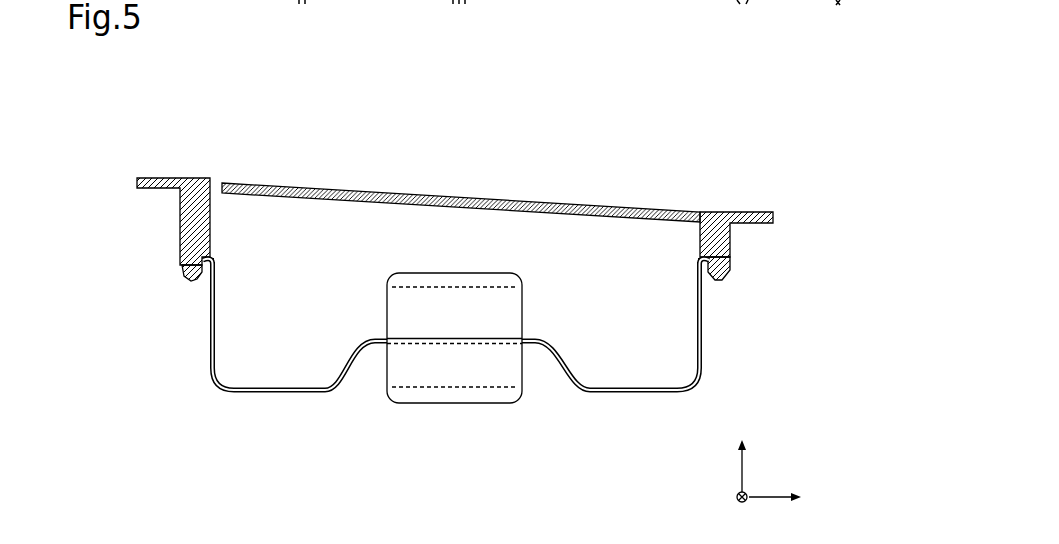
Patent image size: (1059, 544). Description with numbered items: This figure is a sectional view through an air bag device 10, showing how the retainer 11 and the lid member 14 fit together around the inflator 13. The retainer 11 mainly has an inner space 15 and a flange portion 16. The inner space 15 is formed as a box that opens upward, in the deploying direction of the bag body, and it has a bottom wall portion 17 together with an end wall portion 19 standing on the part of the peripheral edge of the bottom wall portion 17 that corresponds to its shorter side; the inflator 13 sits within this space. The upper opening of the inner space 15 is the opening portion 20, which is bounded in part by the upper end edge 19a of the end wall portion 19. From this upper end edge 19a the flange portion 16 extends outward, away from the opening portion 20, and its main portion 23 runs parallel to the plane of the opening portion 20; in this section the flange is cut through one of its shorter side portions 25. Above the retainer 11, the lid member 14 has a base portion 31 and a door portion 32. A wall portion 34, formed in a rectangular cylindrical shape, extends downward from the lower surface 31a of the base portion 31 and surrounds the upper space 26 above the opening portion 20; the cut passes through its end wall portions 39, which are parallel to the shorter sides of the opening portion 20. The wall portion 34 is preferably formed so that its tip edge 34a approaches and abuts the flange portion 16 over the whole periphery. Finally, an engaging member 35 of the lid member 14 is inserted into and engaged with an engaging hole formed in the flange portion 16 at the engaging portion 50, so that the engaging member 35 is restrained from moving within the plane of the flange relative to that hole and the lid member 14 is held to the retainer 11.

The air bag device 10 is at (758, 163).
The retainer 11 is at (719, 333).
The inflator 13 is at (455, 403).
The lid member 14 is at (767, 206).
The inner space 15 is at (640, 393).
The flange portion 16 is at (453, 262).
The bottom wall portion 17 is at (277, 393).
The end wall portion 19 is at (207, 345).
The upper end edge of the end wall portion 19a is at (215, 263).
The opening portion 20 is at (283, 267).
The main portion 23 is at (179, 266).
The shorter side portion 25 is at (171, 283).
The upper space 26 is at (465, 225).
The base portion 31 is at (775, 218).
The lower surface of the base portion 31a is at (755, 225).
The door portion 32 is at (550, 201).
The wall portion 34 is at (453, 301).
The tip edge 34a is at (210, 257).
The engaging member 35 is at (205, 343).
The end wall portion of the wall portion 39 is at (210, 235).
The engaging portion 50 is at (190, 283).